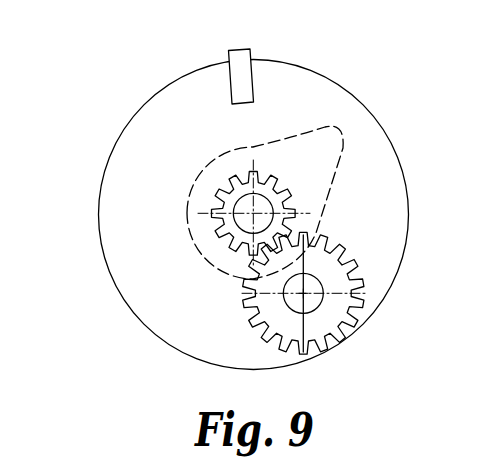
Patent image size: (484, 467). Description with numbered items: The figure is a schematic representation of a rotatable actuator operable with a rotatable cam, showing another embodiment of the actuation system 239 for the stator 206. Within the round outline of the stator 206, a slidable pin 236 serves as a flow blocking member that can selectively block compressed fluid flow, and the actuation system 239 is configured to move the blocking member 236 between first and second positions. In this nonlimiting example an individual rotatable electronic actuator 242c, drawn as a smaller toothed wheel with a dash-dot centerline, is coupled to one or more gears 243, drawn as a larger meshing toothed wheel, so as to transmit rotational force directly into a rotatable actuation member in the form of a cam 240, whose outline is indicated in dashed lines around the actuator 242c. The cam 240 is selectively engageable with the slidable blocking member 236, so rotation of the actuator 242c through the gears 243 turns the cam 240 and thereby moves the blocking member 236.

The stator 206 is at (107, 106).
The slidable pin 236 is at (253, 76).
The actuation system 239 is at (333, 217).
The rotatable cam 240 is at (305, 167).
The rotatable electronic actuator 242c is at (228, 192).
The gear 243 is at (223, 224).